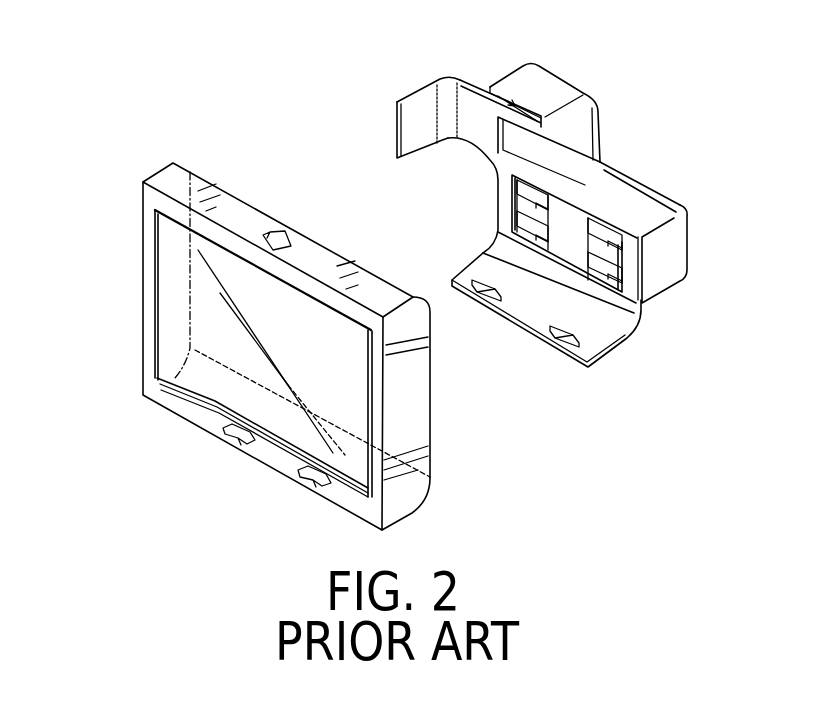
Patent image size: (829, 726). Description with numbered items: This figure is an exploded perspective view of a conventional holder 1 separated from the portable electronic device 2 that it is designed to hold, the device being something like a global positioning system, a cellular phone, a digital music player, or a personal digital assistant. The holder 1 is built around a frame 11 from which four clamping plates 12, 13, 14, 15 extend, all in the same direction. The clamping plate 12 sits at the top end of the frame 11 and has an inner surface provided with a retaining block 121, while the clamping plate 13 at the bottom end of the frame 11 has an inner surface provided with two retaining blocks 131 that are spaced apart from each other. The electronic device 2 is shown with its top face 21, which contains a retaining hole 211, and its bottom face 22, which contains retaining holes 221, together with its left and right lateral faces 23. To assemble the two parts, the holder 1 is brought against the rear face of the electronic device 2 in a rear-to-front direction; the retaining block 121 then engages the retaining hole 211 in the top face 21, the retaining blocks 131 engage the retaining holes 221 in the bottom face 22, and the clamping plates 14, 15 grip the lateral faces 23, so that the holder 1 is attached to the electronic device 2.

The holder 1 is at (662, 123).
The frame 11 is at (612, 223).
The clamping plate 12 is at (548, 98).
The retaining block 121 is at (507, 85).
The clamping plate 13 is at (596, 344).
The retaining blocks 131 is at (481, 294).
The clamping plate 14 is at (410, 122).
The clamping plate 15 is at (667, 255).
The portable electronic device 2 is at (126, 161).
The top face 21 is at (323, 262).
The retaining hole 211 is at (283, 233).
The bottom face 22 is at (187, 420).
The retaining holes 221 is at (240, 447).
The lateral faces 23 is at (138, 275).